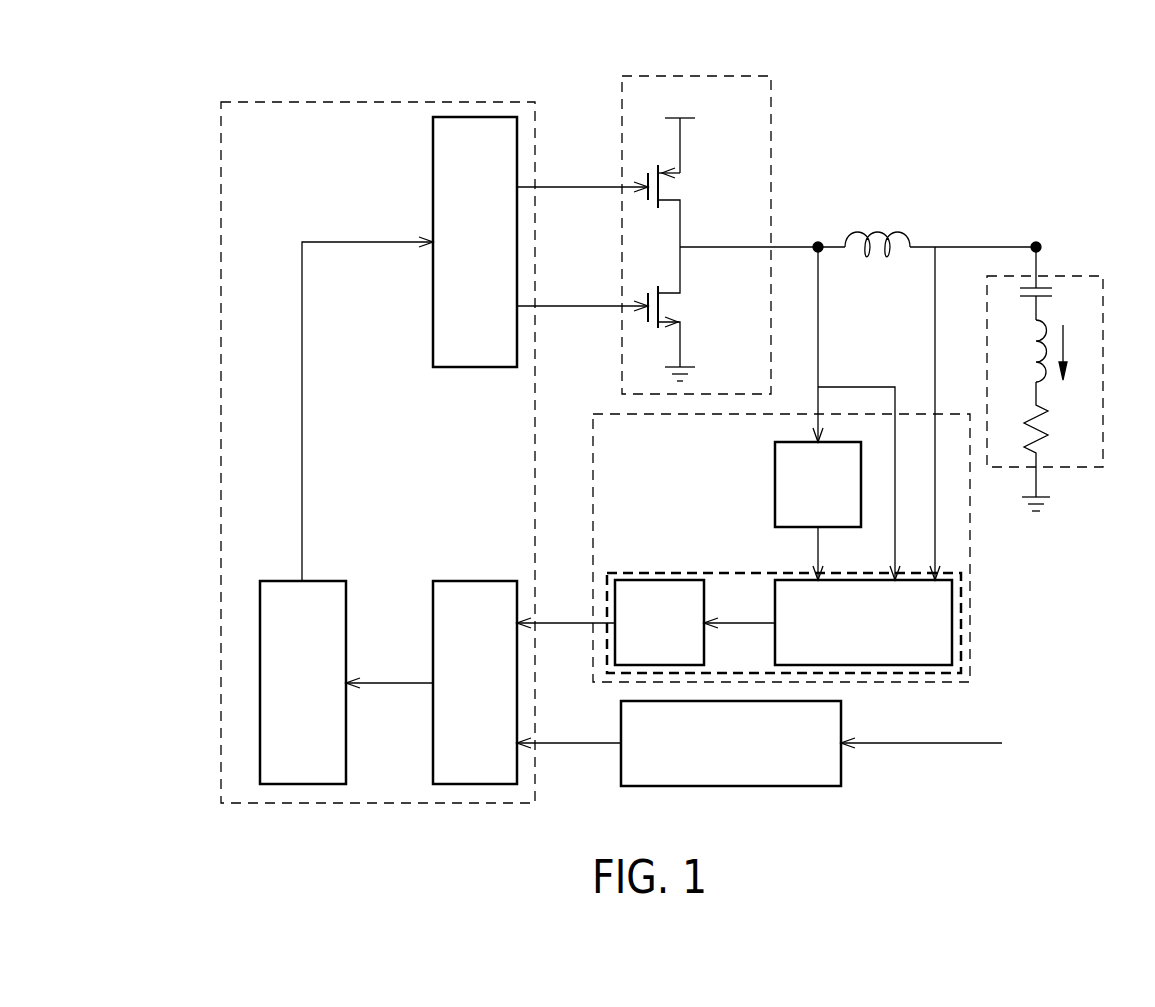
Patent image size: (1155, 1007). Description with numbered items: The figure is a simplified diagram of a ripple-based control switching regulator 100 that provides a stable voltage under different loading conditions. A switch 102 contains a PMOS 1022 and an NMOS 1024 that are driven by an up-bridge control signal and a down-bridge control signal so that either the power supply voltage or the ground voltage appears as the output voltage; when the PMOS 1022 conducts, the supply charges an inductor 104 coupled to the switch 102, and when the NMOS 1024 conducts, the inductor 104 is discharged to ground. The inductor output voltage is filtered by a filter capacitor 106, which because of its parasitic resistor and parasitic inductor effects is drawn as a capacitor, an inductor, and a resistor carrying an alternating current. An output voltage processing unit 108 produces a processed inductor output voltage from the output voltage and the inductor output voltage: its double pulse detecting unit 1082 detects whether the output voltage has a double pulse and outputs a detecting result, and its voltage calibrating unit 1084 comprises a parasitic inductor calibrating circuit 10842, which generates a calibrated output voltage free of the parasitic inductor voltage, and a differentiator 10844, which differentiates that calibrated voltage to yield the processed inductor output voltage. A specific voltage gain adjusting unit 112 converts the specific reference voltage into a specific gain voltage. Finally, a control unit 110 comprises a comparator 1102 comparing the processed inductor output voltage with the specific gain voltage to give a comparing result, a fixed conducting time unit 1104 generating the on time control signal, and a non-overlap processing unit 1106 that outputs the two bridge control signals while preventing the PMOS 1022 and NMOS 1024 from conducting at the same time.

The ripple-based control switching regulator 100 is at (1033, 96).
The switch 102 is at (773, 109).
The PMOS 1022 is at (678, 185).
The NMOS 1024 is at (678, 305).
The inductor 104 is at (877, 225).
The filter capacitor 106 is at (1070, 275).
The output voltage processing unit 108 is at (972, 647).
The double pulse detecting unit 1082 is at (847, 498).
The voltage calibrating unit 1084 is at (684, 572).
The parasitic inductor calibrating circuit 10842 is at (895, 633).
The differentiator 10844 is at (693, 633).
The control unit 110 is at (220, 231).
The comparator 1102 is at (502, 693).
The fixed conducting time unit 1104 is at (330, 693).
The non-overlap processing unit 1106 is at (502, 253).
The specific voltage gain adjusting unit 112 is at (747, 754).